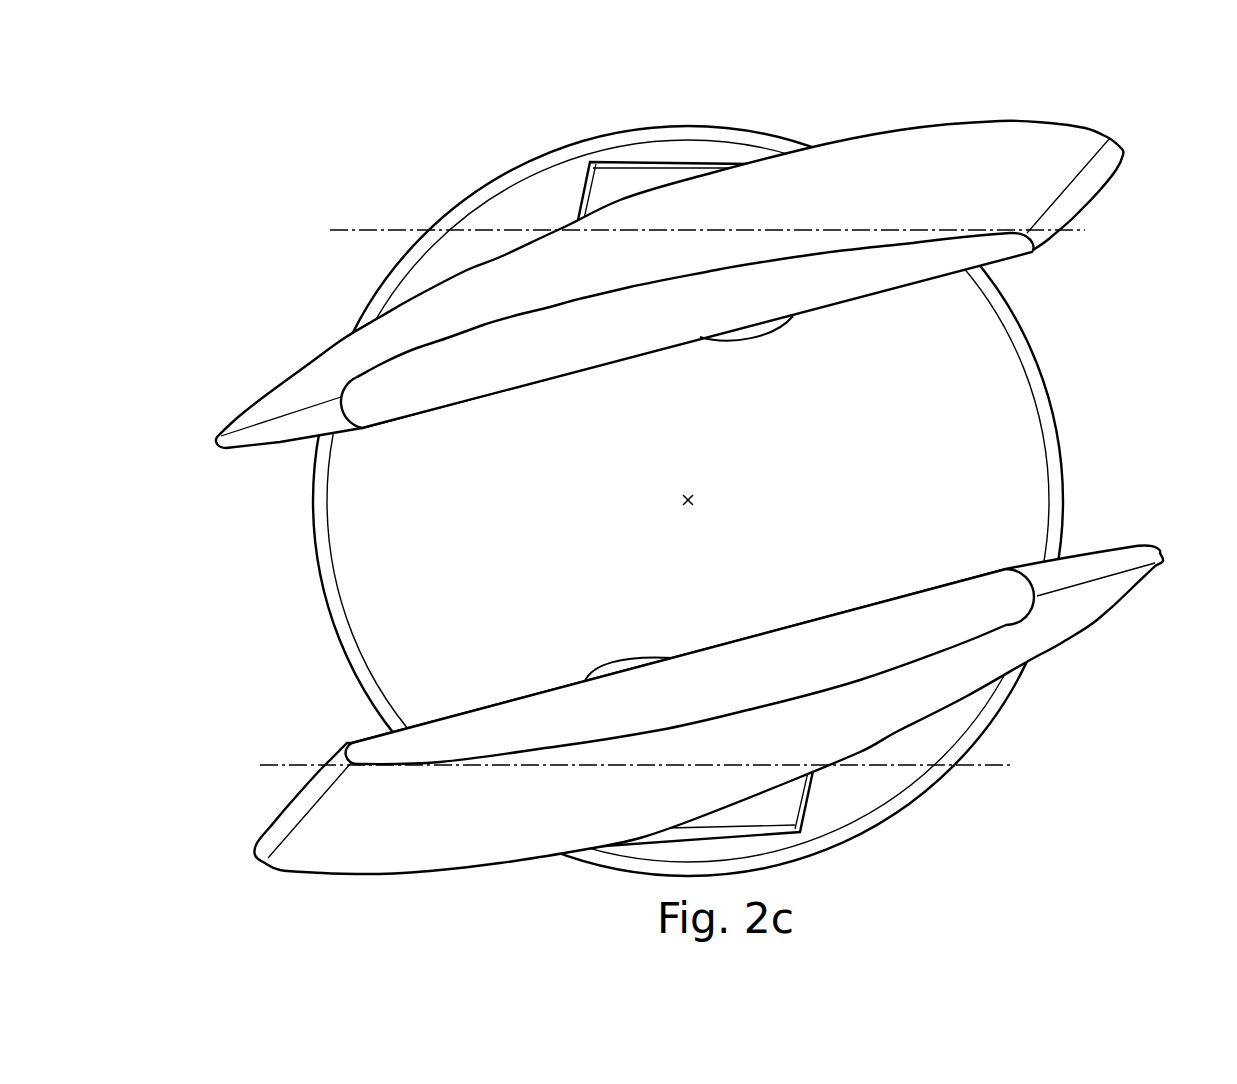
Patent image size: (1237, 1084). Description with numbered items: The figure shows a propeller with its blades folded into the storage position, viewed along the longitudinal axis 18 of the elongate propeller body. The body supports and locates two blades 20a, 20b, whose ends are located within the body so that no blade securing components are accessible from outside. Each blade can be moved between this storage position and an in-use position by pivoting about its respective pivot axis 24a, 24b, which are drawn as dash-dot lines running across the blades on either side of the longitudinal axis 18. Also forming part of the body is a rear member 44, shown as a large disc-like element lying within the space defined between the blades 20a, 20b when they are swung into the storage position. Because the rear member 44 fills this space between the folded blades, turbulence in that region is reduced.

The longitudinal axis 18 is at (687, 500).
The blade 20a is at (1043, 137).
The blade 20b is at (1050, 620).
The pivot axis 24a is at (1085, 230).
The pivot axis 24b is at (1010, 765).
The rear member 44 is at (987, 420).